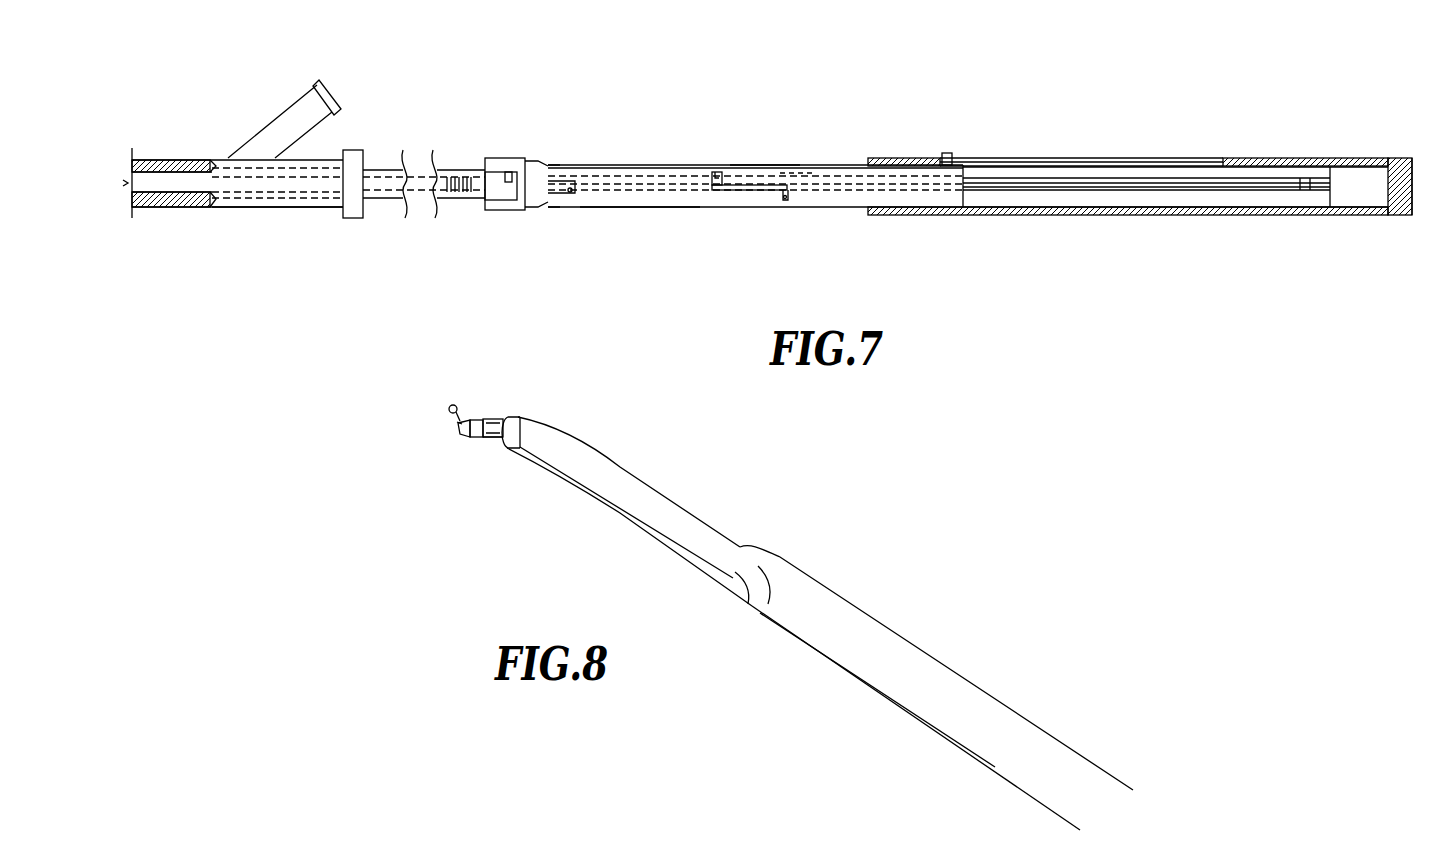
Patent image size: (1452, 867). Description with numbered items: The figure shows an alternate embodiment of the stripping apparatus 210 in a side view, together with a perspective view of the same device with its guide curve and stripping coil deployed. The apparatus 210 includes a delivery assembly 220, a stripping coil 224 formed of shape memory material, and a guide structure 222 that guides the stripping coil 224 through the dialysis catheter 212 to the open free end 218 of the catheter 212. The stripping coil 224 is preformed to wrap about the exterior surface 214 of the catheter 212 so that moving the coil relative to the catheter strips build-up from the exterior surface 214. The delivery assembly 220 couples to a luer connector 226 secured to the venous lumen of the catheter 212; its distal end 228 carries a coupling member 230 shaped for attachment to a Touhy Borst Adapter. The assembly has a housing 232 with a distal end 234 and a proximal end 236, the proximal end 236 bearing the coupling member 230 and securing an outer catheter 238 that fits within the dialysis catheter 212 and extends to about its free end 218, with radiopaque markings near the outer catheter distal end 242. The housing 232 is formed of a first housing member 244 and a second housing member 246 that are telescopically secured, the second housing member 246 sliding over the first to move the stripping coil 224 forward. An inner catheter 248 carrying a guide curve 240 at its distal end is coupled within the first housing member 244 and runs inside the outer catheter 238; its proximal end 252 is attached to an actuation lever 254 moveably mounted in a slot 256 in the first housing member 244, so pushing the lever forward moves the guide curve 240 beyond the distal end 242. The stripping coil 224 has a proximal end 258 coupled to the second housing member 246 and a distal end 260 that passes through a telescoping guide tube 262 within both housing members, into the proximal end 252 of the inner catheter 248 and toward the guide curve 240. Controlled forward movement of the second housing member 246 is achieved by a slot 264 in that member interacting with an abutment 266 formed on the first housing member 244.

In FIG. 7, the apparatus 210 is at (837, 82).
In FIG. 7, the catheter 212 is at (182, 167).
In FIG. 8, the catheter 212 is at (853, 705).
In FIG. 8, the exterior surface 214 is at (707, 533).
In FIG. 8, the free end 218 is at (513, 430).
In FIG. 7, the delivery assembly 220 is at (760, 163).
In FIG. 8, the guide structure 222 is at (497, 417).
In FIG. 7, the stripping coil 224 is at (1178, 190).
In FIG. 8, the stripping coil 224 is at (457, 422).
In FIG. 7, the luer connector 226 is at (245, 205).
In FIG. 7, the distal end 228 is at (553, 165).
In FIG. 7, the coupling member 230 is at (507, 212).
In FIG. 7, the housing 232 is at (963, 213).
In FIG. 7, the distal end 234 is at (575, 168).
In FIG. 7, the proximal end 236 is at (1377, 163).
In FIG. 7, the outer catheter 238 is at (155, 208).
In FIG. 8, the outer catheter 238 is at (483, 437).
In FIG. 8, the guide curve 240 is at (460, 432).
In FIG. 8, the distal end 242 is at (477, 420).
In FIG. 7, the first housing member 244 is at (597, 208).
In FIG. 7, the second housing member 246 is at (1062, 213).
In FIG. 7, the inner catheter 248 is at (152, 183).
In FIG. 7, the proximal end 252 is at (813, 173).
In FIG. 7, the actuation lever 254 is at (785, 205).
In FIG. 7, the slot 256 is at (723, 170).
In FIG. 7, the proximal end 258 is at (1307, 180).
In FIG. 8, the distal end 260 is at (449, 408).
In FIG. 7, the telescoping guide tube 262 is at (1147, 180).
In FIG. 7, the slot 264 is at (1058, 162).
In FIG. 7, the abutment 266 is at (947, 153).